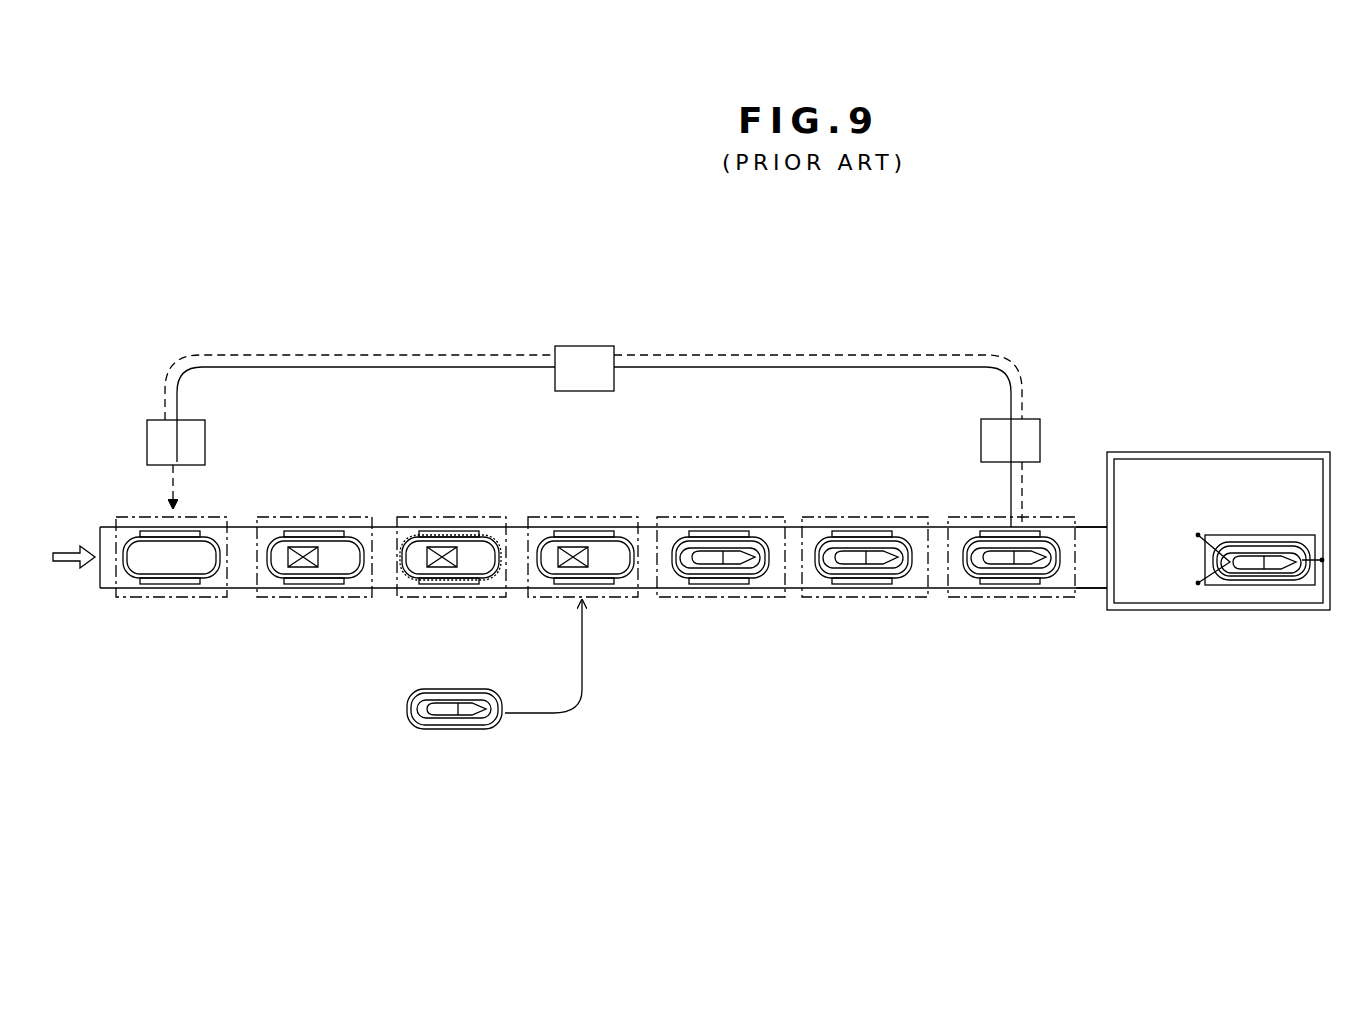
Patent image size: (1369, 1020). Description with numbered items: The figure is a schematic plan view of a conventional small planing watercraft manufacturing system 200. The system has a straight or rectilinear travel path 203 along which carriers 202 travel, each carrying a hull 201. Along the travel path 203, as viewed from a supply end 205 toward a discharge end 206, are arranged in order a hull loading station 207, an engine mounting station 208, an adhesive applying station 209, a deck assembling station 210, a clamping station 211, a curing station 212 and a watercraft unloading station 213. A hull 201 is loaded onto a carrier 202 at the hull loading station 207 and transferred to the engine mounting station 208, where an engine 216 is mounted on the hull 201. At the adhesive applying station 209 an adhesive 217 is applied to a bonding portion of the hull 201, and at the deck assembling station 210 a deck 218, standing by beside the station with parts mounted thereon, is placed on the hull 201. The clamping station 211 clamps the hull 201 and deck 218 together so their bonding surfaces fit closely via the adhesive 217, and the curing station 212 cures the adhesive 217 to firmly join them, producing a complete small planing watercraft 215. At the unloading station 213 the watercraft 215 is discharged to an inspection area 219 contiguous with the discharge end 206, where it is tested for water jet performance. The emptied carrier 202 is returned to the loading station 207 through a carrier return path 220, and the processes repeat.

The small planing watercraft manufacturing system 200 is at (203, 303).
The hull 201 is at (135, 570).
The carrier 202 is at (160, 420).
The travel path 203 is at (238, 540).
The supply end 205 is at (98, 557).
The discharge end 206 is at (1097, 563).
The hull loading station 207 is at (135, 517).
The engine mounting station 208 is at (330, 520).
The adhesive applying station 209 is at (418, 520).
The deck assembling station 210 is at (545, 520).
The clamping station 211 is at (672, 520).
The curing station 212 is at (823, 520).
The watercraft unloading station 213 is at (960, 520).
The small planing watercraft 215 is at (895, 562).
The engine 216 is at (303, 560).
The adhesive 217 is at (488, 538).
The deck 218 is at (752, 560).
The inspection area 219 is at (1205, 452).
The carrier return path 220 is at (460, 366).